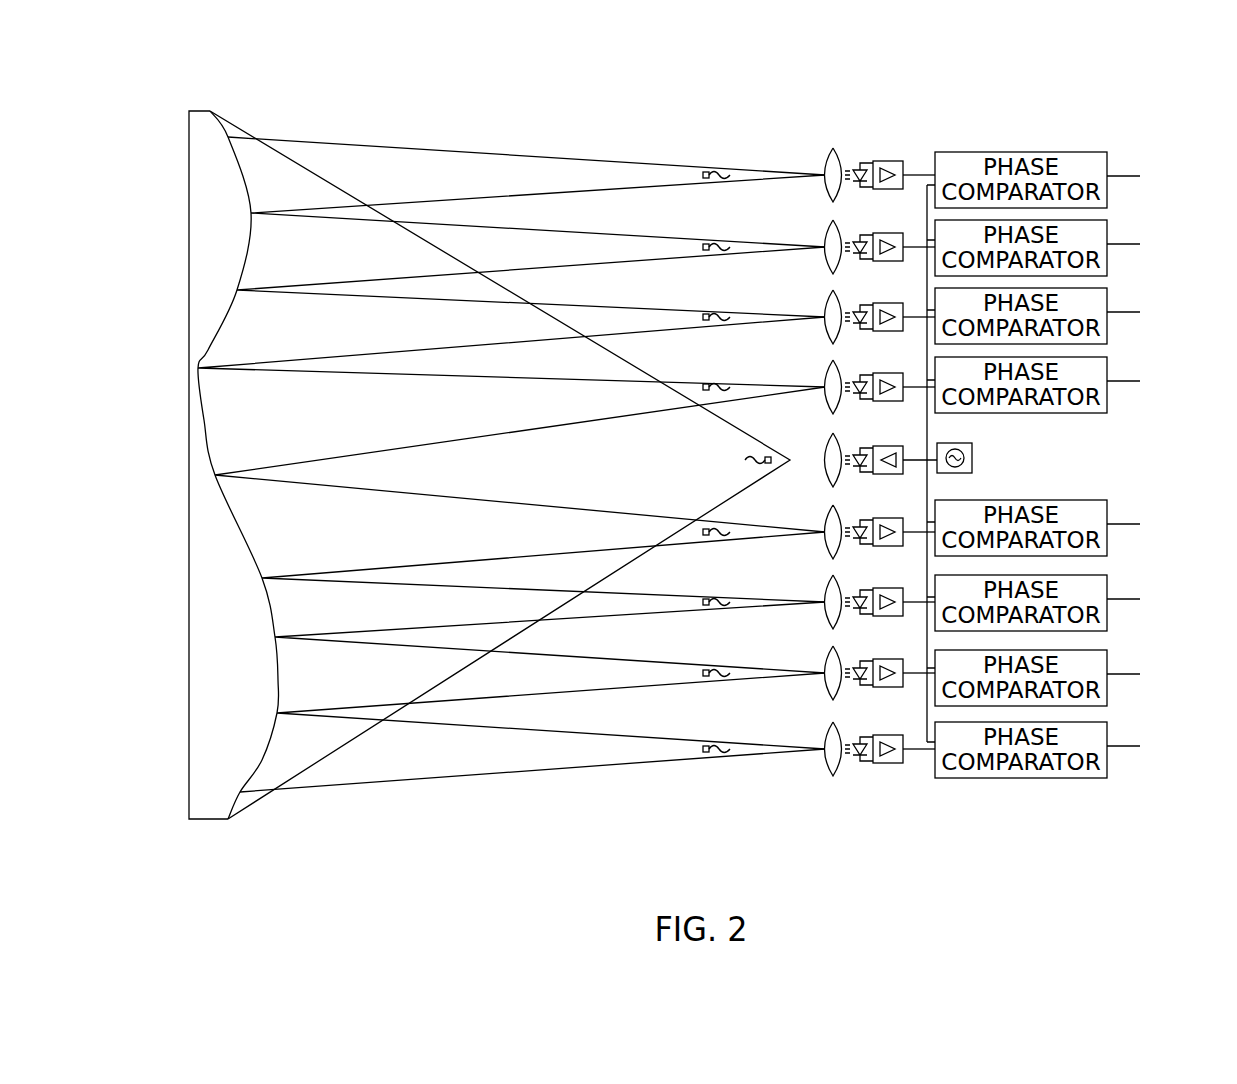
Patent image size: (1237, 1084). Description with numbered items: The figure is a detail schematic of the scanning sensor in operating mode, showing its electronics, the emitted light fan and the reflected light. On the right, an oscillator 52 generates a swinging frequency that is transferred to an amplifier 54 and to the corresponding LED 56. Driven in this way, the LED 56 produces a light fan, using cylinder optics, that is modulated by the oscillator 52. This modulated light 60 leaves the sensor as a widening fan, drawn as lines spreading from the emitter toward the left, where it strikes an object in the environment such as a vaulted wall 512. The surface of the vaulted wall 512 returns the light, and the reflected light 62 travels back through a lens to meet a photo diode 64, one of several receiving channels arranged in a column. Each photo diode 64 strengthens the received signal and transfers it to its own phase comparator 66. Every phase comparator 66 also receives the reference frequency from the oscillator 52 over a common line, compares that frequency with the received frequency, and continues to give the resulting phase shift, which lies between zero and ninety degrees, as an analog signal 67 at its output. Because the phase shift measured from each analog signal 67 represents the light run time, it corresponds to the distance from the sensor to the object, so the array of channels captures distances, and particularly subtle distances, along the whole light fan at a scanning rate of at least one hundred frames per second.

The vaulted wall 512 is at (217, 817).
The modulated light 60 is at (768, 442).
The reflected light 62 is at (748, 174).
The photo diode 64 is at (868, 157).
The phase comparator 66 is at (998, 133).
The analog signal 67 is at (1157, 447).
The amplifier 54 is at (890, 437).
The LED 56 is at (848, 469).
The oscillator 52 is at (988, 453).